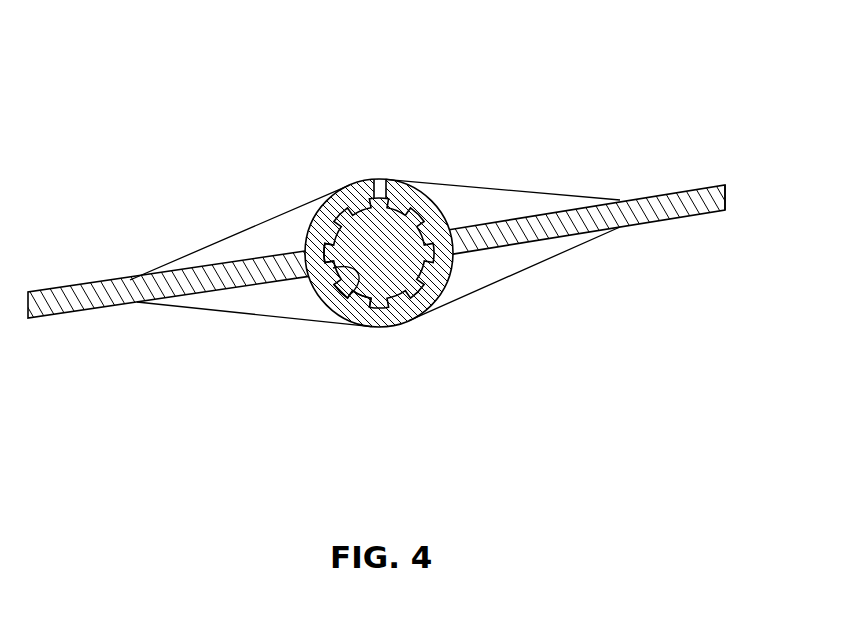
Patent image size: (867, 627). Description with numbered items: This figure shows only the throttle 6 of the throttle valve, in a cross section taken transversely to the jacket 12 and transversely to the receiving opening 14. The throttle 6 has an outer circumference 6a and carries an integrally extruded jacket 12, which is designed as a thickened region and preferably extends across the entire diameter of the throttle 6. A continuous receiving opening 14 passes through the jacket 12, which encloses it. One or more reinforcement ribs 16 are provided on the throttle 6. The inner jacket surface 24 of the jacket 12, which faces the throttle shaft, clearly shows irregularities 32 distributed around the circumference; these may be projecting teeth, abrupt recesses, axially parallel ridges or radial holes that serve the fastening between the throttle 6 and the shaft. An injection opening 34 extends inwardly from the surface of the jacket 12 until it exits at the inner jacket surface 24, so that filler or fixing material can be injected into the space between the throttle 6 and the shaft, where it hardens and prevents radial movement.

The throttle 6 is at (546, 144).
The circumference 6a is at (728, 192).
The jacket 12 is at (437, 306).
The receiving opening 14 is at (391, 280).
The reinforcement rib 16 is at (515, 258).
The jacket surface 24 is at (362, 300).
The irregularities 32 is at (337, 251).
The injection opening 34 is at (379, 185).